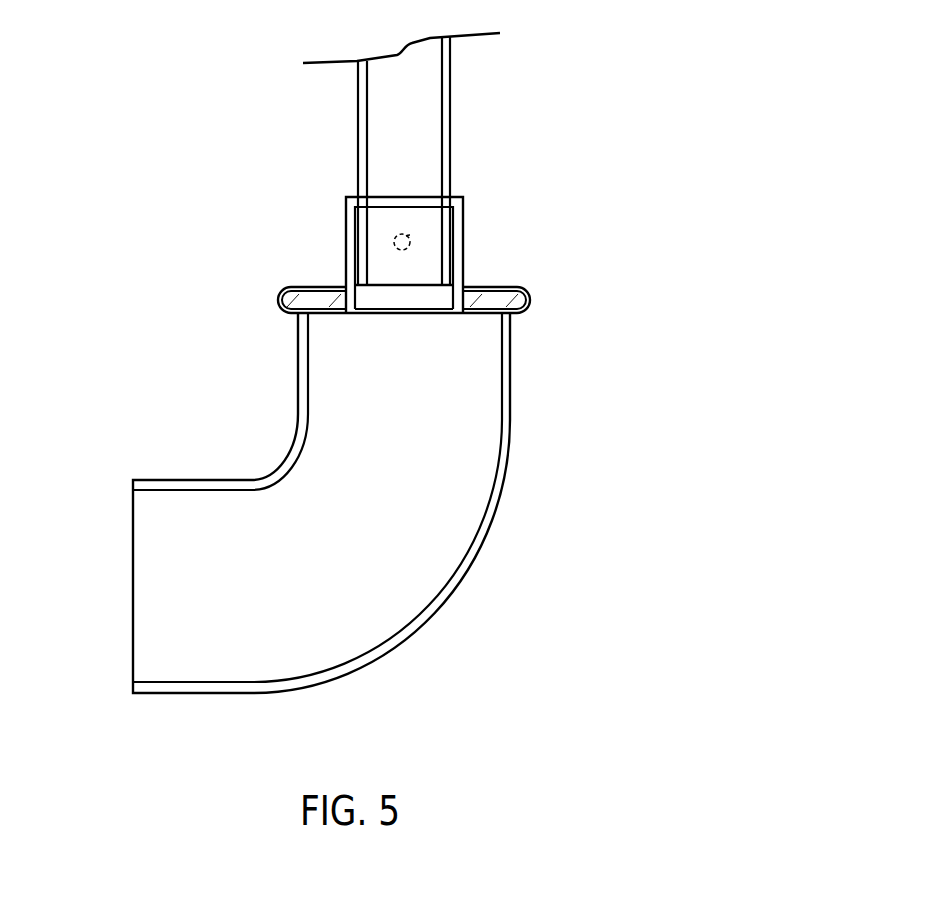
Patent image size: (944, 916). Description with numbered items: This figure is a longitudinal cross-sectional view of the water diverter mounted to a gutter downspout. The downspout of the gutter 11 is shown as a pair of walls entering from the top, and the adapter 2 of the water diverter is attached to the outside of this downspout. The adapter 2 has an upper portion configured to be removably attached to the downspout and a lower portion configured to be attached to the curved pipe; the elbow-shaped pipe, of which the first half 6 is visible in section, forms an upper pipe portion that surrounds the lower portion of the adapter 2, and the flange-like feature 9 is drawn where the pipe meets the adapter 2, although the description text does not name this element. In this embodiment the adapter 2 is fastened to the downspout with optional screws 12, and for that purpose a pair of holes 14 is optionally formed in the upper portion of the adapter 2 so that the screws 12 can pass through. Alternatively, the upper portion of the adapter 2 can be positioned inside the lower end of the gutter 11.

The adapter 2 is at (464, 255).
The first half 6 is at (468, 559).
The flange 9 is at (298, 340).
The gutter 11 is at (393, 146).
The screws 12 is at (412, 243).
The holes 14 is at (413, 233).